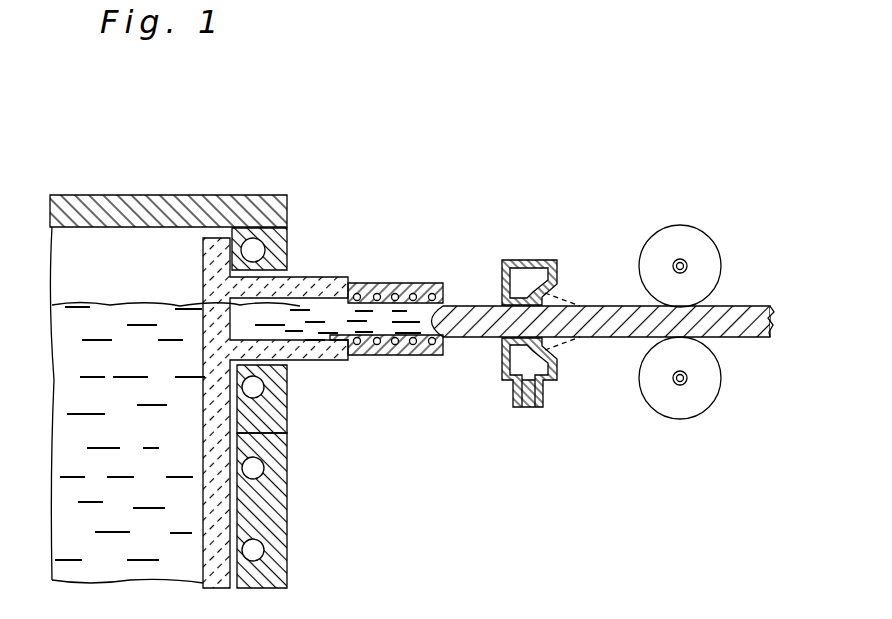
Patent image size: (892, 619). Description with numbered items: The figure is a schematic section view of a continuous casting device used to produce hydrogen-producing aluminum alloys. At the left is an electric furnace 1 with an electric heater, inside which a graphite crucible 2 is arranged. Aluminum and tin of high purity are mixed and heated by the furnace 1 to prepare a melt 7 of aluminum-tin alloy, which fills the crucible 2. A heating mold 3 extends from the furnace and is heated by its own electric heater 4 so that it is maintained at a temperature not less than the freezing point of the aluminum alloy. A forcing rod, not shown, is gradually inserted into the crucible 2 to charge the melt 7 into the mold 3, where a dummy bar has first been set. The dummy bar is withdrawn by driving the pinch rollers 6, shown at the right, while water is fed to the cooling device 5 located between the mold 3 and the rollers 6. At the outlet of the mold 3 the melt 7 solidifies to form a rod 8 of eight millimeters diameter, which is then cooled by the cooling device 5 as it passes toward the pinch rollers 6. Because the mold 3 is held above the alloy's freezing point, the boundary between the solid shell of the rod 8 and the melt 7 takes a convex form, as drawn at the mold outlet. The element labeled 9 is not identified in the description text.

The electric furnace 1 is at (287, 533).
The graphite crucible 2 is at (287, 433).
The heating mold 3 is at (421, 283).
The electric heater 4 is at (378, 283).
The cooling device 5 is at (543, 260).
The pinch rollers 6 is at (695, 418).
The melt 7 is at (128, 305).
The rod 8 is at (612, 340).
The lower wiper 9 is at (527, 415).